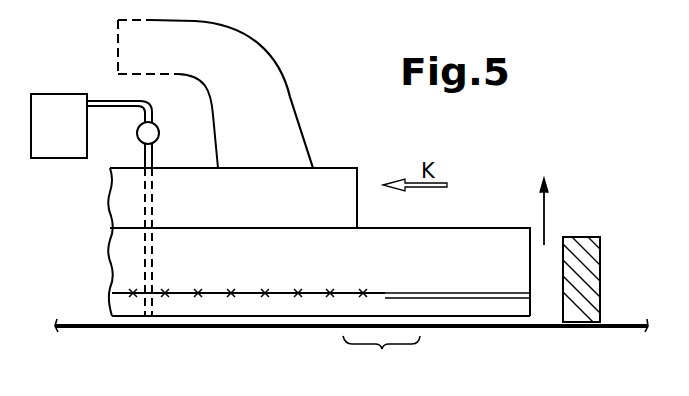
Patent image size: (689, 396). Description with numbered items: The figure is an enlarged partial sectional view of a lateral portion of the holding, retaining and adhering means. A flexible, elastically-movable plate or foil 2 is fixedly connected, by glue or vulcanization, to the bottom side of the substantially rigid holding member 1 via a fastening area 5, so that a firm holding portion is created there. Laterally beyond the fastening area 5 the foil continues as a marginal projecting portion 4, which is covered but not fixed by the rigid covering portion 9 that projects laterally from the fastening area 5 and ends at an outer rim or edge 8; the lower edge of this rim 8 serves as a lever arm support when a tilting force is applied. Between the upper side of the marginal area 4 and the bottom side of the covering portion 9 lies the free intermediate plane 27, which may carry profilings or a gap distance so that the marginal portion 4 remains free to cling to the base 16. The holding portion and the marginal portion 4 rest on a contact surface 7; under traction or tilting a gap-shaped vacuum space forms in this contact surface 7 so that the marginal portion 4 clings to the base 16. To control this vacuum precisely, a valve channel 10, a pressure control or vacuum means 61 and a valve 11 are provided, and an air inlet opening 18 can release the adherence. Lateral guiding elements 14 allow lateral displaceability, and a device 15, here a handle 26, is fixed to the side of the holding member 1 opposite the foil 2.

The holding member 1 is at (197, 248).
The plate or foil 2 is at (212, 305).
The marginal projecting portion 4 is at (493, 307).
The fastening area 5 is at (278, 293).
The contact surface 7 is at (280, 318).
The outer rim or edge 8 is at (530, 268).
The covering portion 9 is at (472, 238).
The valve channel 10 is at (147, 268).
The valve 11 is at (138, 137).
The lateral guiding elements 14 is at (590, 262).
The device 15 is at (292, 88).
The base 16 is at (648, 322).
The air inlet opening 18 is at (381, 357).
The handle 26 is at (288, 128).
The intermediate plane 27 is at (433, 295).
The pressure control or vacuum means 61 is at (72, 139).